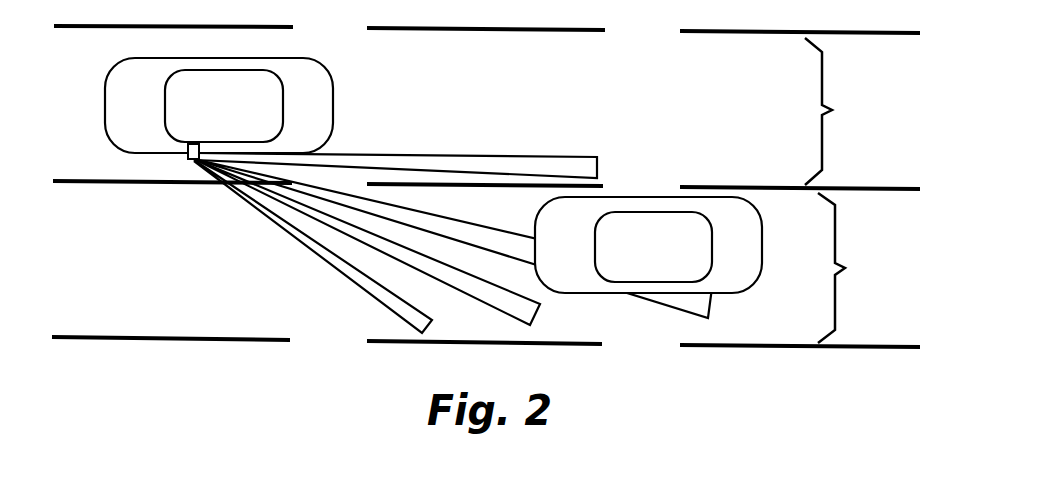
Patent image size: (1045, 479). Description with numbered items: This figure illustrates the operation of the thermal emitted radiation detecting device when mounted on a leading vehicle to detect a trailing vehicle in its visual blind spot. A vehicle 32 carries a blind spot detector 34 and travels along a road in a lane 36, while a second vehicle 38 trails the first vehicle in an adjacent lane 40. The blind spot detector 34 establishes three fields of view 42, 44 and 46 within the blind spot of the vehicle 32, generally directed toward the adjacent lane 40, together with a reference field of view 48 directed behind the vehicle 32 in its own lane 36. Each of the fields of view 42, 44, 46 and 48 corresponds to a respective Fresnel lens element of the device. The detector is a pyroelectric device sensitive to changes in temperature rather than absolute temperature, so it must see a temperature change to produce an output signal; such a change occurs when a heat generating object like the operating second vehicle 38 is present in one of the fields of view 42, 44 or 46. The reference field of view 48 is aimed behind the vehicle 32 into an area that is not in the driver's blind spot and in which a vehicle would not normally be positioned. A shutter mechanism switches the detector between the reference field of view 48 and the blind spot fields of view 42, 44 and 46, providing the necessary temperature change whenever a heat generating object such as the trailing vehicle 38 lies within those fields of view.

The vehicle 32 is at (333, 90).
The blind spot detector 34 is at (188, 160).
The lane 36 is at (835, 110).
The second vehicle 38 is at (762, 260).
The adjacent lane 40 is at (847, 268).
The field of view 42 is at (432, 322).
The field of view 44 is at (541, 311).
The field of view 46 is at (711, 310).
The reference field of view 48 is at (553, 157).